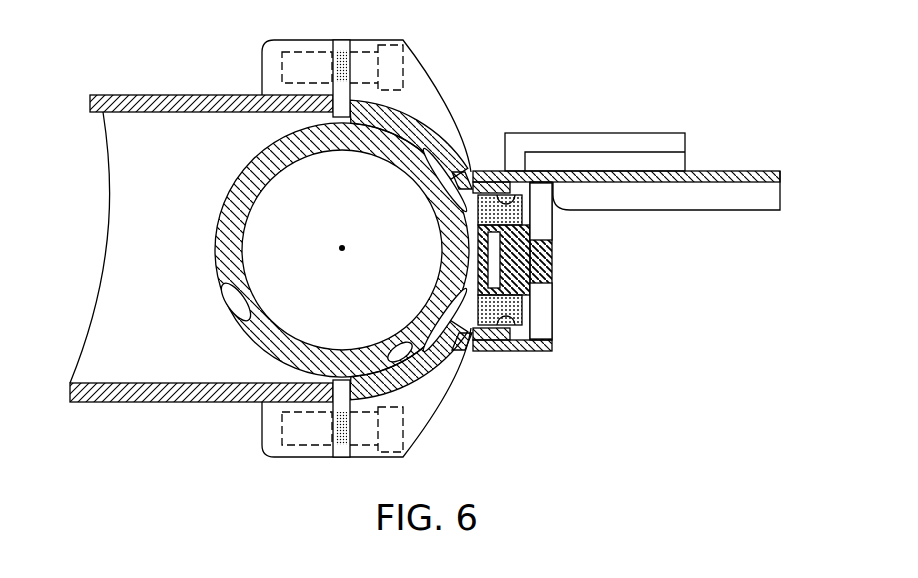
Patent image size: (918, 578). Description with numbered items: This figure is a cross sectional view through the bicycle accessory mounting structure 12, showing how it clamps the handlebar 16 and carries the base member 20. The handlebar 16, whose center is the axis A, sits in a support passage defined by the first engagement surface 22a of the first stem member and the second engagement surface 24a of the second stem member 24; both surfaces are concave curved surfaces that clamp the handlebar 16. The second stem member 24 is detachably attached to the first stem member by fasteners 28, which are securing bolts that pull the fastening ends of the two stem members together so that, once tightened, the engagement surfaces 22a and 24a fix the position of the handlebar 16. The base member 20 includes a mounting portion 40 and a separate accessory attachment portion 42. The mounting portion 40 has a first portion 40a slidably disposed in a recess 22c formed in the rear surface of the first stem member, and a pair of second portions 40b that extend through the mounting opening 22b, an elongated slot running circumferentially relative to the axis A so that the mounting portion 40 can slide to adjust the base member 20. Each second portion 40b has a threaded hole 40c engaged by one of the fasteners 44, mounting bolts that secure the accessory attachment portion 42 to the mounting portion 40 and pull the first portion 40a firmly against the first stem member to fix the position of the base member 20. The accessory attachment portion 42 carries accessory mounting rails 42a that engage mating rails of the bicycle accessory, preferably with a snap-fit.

The bicycle accessory mounting structure 12 is at (578, 50).
The handlebar 16 is at (226, 170).
The base member 20 is at (724, 157).
The first engagement surface 22a is at (412, 372).
The mounting opening 22b is at (447, 150).
The recess 22c is at (430, 352).
The second stem member 24 is at (153, 93).
The second engagement surface 24a is at (238, 312).
The fasteners 28 is at (405, 67).
The mounting portion 40 is at (532, 274).
The first portion 40a is at (486, 266).
The second portions 40b is at (493, 174).
The threaded hole 40c is at (503, 205).
The accessory attachment portion 42 is at (557, 256).
The accessory mounting rails 42a is at (636, 133).
The fasteners 44 is at (541, 225).
The axis A is at (343, 253).